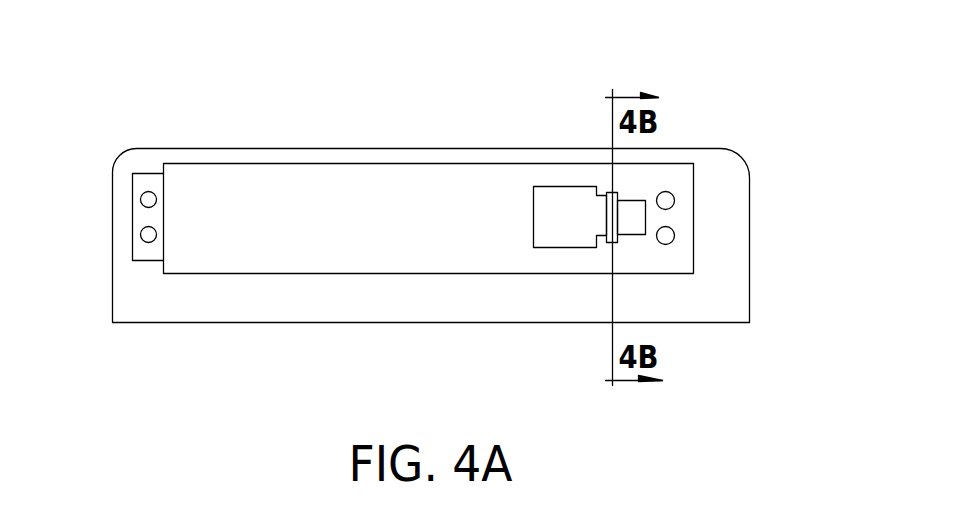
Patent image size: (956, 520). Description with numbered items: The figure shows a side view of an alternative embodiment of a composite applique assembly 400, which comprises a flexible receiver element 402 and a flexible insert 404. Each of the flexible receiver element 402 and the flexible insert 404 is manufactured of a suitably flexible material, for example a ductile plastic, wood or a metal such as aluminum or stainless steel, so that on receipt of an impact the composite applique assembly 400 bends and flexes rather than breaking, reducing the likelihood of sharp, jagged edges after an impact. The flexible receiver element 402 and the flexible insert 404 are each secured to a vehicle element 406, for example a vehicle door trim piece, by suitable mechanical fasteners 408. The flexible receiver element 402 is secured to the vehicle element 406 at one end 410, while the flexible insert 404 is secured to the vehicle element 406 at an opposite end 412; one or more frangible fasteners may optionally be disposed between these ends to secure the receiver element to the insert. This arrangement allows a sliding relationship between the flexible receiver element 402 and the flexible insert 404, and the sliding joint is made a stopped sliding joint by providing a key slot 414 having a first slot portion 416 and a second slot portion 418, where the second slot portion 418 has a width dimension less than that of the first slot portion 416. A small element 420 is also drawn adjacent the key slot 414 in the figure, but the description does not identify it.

The composite applique assembly 400 is at (217, 62).
The flexible receiver element 402 is at (300, 162).
The flexible insert 404 is at (147, 173).
The vehicle element 406 is at (738, 307).
The mechanical fasteners 408 is at (138, 202).
The end 410 is at (695, 180).
The end 412 is at (132, 252).
The key slot 414 is at (498, 206).
The first slot portion 416 is at (542, 217).
The second slot portion 418 is at (630, 228).
The flange 420 is at (610, 192).